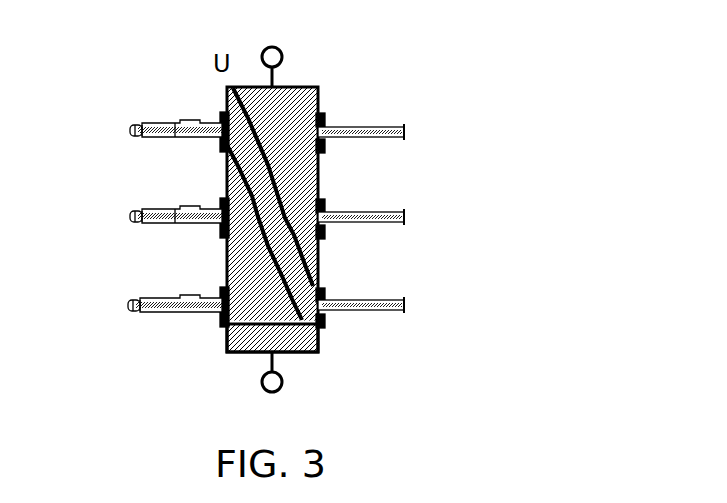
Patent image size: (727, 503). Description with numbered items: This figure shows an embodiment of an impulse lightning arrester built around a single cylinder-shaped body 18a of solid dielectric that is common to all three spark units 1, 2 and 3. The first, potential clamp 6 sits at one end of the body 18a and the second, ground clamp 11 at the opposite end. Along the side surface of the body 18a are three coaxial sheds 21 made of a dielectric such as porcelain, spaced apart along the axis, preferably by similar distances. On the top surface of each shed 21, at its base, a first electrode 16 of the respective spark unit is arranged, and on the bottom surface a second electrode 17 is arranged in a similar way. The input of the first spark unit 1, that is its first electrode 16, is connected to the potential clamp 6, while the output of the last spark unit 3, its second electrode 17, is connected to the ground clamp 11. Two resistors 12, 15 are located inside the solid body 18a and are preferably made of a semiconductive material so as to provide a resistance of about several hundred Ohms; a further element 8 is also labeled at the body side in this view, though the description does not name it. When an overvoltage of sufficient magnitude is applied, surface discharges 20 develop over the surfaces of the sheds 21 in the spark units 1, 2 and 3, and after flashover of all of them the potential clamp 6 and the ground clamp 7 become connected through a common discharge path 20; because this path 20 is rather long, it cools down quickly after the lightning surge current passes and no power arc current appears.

The first spark unit 1 is at (113, 122).
The second spark unit 2 is at (112, 213).
The last spark unit 3 is at (112, 301).
The first potential clamp 6 is at (283, 62).
The ground clamp 7 is at (225, 184).
The lower left port 8 is at (225, 275).
The second ground clamp 11 is at (283, 385).
The resistor 12 is at (250, 356).
The resistor 15 is at (225, 110).
The first electrode 16 is at (326, 118).
The second electrode 17 is at (326, 147).
The cylinder-shaped body 18a is at (305, 88).
The surface discharge 20 is at (140, 138).
The coaxial shed 21 is at (140, 125).